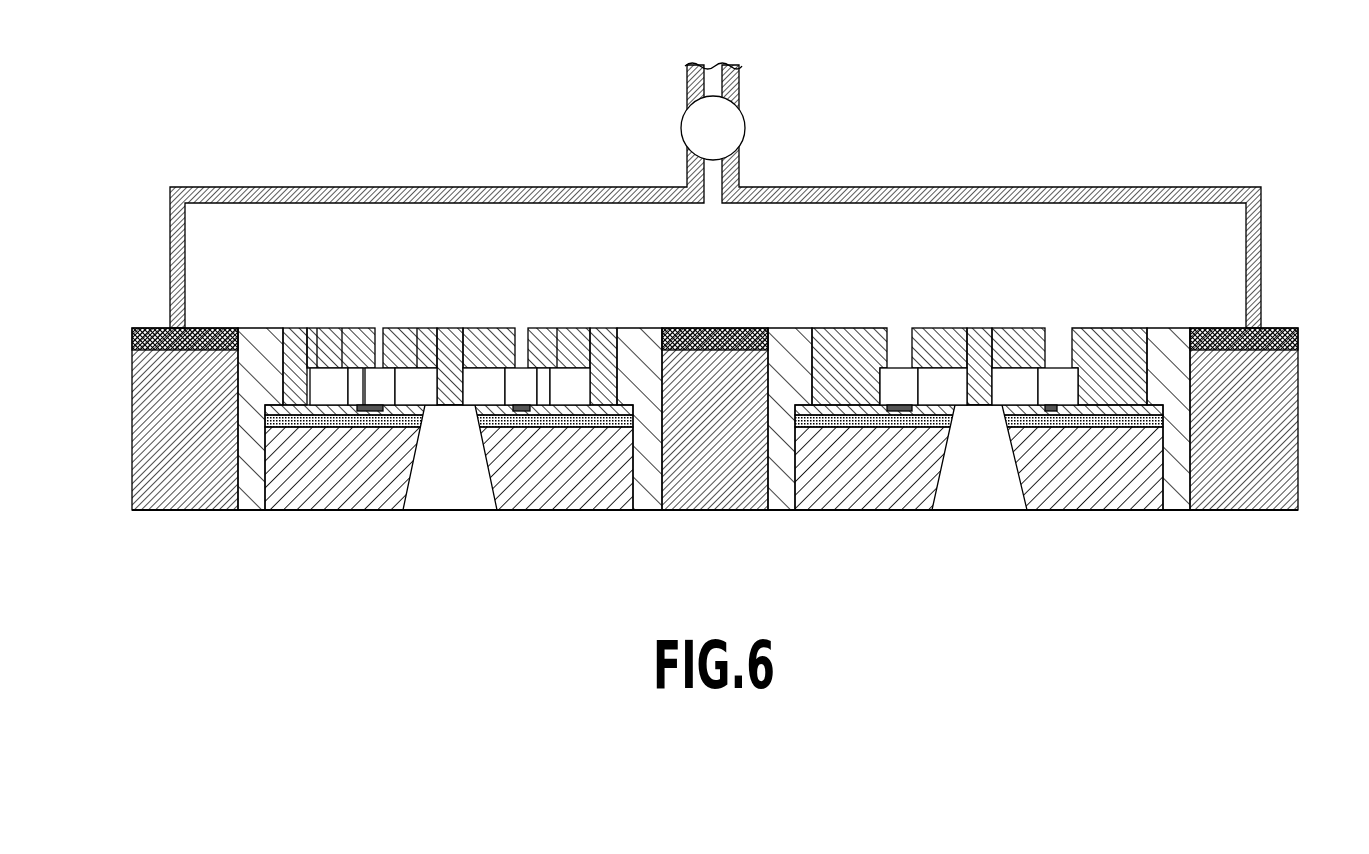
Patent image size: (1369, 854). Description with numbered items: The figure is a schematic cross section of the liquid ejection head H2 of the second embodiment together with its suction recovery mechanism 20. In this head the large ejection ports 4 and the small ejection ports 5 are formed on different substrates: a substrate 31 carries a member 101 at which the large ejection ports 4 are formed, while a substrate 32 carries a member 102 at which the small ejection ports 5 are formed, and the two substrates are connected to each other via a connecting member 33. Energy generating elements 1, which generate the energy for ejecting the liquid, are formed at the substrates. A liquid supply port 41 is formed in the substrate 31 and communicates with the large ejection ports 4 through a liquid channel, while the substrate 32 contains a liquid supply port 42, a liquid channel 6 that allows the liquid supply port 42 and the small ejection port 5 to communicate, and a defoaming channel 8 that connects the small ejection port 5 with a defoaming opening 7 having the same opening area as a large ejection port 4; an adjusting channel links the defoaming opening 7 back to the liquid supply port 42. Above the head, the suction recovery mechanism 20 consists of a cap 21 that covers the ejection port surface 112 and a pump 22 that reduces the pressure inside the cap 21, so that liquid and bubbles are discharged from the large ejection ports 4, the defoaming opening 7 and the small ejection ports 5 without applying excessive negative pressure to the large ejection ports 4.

The energy generating element 1 is at (378, 413).
The large ejection port 4 is at (908, 329).
The small ejection port 5 is at (382, 340).
The liquid channel 6 is at (478, 383).
The defoaming opening 7 is at (334, 331).
The defoaming channel 8 is at (320, 392).
The suction recovery mechanism 20 is at (715, 195).
The cap 21 is at (860, 186).
The pump 22 is at (756, 128).
The substrate 31 is at (1131, 478).
The substrate 32 is at (553, 478).
The connecting member 33 is at (715, 478).
The liquid supply port 41 is at (979, 478).
The liquid supply port 42 is at (453, 478).
The member 101 is at (1113, 329).
The member 102 is at (362, 340).
The ejection port surface 112 is at (152, 328).
The liquid ejection head H2 is at (168, 548).